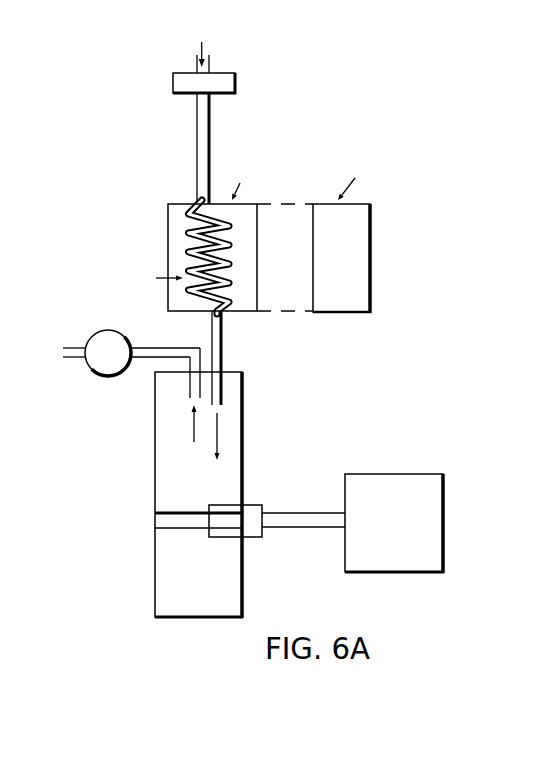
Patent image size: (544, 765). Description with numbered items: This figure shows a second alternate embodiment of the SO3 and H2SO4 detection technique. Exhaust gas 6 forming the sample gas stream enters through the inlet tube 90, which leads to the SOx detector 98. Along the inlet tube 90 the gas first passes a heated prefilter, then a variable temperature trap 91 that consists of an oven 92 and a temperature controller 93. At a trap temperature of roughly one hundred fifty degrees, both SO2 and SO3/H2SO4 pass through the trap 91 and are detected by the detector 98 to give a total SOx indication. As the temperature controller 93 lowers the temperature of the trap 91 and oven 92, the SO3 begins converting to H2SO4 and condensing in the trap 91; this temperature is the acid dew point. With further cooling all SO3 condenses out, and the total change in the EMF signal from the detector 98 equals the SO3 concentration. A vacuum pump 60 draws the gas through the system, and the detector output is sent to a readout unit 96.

The exhaust gas 6 is at (206, 56).
The inlet tube 90 is at (196, 136).
The variable temperature trap 91 is at (162, 234).
The oven 92 is at (166, 277).
The temperature controller 93 is at (343, 305).
The vacuum pump 60 is at (93, 365).
The SOx detector 98 is at (288, 437).
The readout / recorder 96 is at (430, 563).